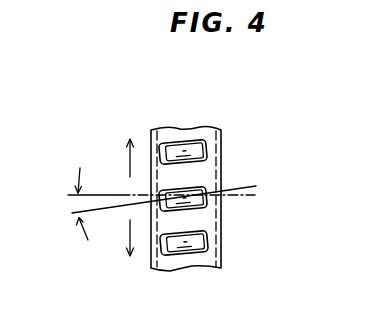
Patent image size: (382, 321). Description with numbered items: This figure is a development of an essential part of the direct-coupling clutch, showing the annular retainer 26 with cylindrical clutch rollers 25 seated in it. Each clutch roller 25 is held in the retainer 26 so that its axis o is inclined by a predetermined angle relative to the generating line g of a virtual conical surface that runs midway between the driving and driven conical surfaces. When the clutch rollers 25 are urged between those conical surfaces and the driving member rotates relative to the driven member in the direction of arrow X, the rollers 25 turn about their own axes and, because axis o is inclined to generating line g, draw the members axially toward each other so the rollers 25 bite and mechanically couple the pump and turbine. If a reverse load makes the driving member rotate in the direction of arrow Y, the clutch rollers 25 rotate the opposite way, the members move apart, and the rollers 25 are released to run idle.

The clutch roller 25 is at (192, 148).
The annular retainer 26 is at (175, 138).
The arrow X is at (128, 146).
The arrow Y is at (129, 248).
The generating line g is at (97, 194).
The axis o is at (108, 210).